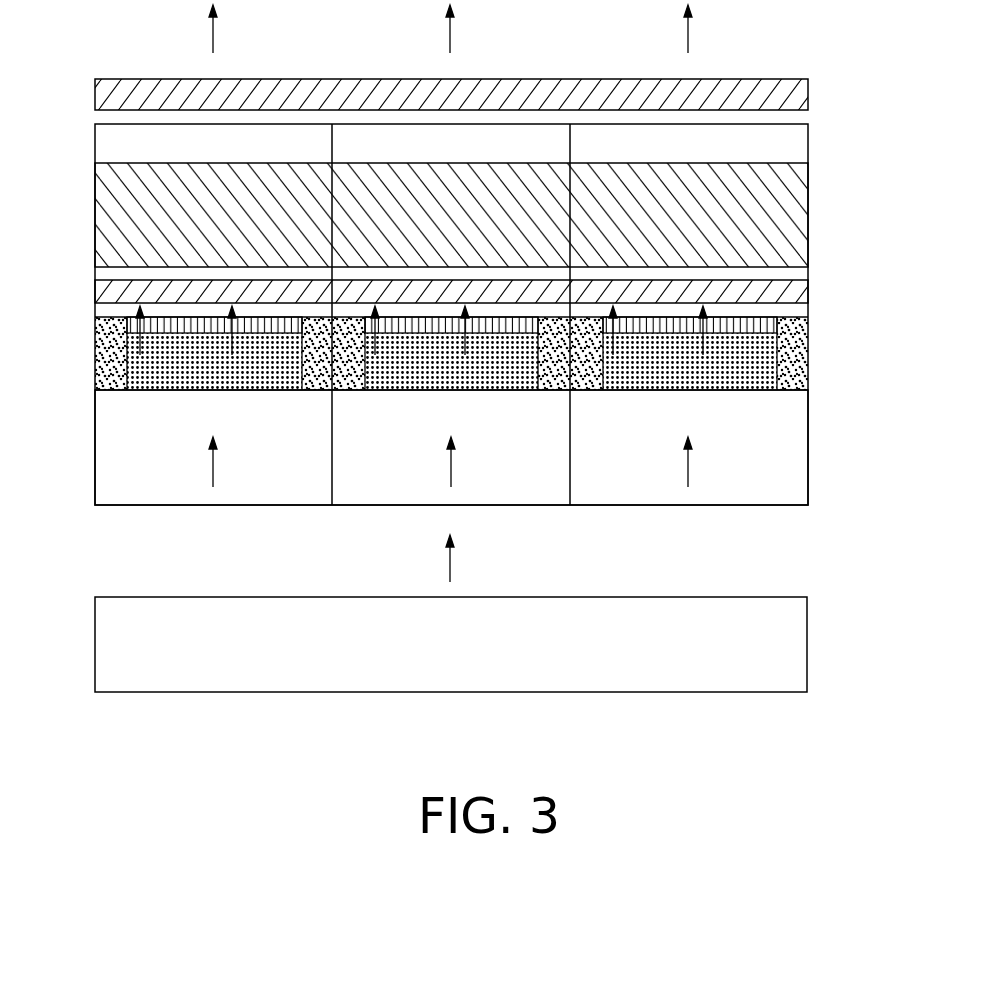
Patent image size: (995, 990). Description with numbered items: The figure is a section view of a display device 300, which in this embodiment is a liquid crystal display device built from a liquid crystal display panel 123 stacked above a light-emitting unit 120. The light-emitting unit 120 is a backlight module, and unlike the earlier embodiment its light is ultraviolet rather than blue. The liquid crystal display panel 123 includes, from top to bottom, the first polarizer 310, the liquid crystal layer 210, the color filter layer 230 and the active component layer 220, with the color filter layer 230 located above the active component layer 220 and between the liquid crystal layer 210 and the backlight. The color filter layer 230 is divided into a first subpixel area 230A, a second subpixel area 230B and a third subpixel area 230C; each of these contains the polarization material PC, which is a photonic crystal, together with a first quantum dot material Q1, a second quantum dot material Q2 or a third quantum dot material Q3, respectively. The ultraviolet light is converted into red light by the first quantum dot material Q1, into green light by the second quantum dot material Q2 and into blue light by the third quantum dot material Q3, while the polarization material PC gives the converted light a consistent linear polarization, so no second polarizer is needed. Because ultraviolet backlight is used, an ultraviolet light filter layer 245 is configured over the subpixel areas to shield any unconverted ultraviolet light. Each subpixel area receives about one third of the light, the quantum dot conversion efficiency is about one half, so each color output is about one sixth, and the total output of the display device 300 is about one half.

The display device 300 is at (868, 760).
The liquid crystal display panel 123 is at (78, 82).
The first polarizer 310 is at (800, 96).
The liquid crystal layer 210 is at (809, 165).
The ultraviolet light filter layer 245 is at (107, 293).
The color filter layer 230 is at (456, 281).
The first subpixel area 230A is at (190, 369).
The second subpixel area 230B is at (451, 281).
The third subpixel area 230C is at (716, 369).
The polarization material PC is at (137, 322).
The first quantum dot material Q1 is at (175, 361).
The second quantum dot material Q2 is at (412, 380).
The third quantum dot material Q3 is at (752, 385).
The active component layer 220 is at (809, 395).
The light-emitting unit 120 is at (798, 648).